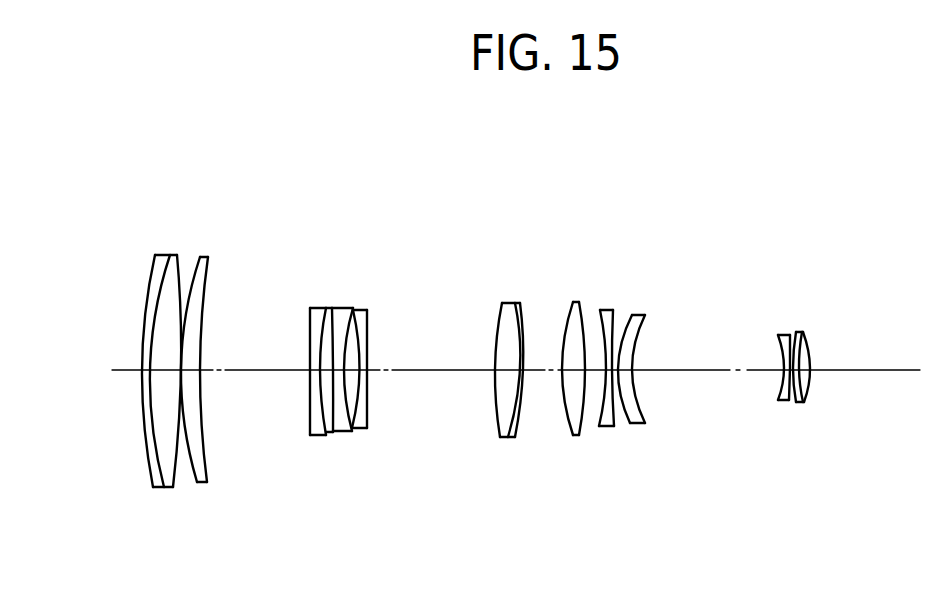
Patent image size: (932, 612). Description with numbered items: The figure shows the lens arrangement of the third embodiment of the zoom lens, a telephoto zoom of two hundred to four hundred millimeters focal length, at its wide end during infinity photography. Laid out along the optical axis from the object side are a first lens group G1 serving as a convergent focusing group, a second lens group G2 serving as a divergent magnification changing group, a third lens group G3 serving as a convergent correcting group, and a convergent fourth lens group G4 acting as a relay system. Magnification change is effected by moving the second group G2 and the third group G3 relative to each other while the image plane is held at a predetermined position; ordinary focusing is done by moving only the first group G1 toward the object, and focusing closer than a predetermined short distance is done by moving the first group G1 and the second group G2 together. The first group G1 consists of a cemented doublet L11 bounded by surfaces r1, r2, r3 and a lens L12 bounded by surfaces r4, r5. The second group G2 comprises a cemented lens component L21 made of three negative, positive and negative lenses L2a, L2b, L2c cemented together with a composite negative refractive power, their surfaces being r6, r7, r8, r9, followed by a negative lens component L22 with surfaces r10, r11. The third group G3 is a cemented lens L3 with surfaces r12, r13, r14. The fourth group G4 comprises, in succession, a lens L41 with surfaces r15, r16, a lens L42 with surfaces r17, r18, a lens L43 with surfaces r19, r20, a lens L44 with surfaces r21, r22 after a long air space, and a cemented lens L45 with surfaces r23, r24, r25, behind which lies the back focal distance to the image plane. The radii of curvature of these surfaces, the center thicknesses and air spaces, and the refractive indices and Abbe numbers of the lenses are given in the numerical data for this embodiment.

The first lens group G1 is at (225, 197).
The second lens group G2 is at (387, 197).
The third lens group G3 is at (513, 357).
The fourth lens group G4 is at (827, 249).
The cemented lens component L11 is at (187, 243).
The lens L12 is at (208, 257).
The cemented lens component L21 is at (360, 252).
The negative lens L2a is at (313, 307).
The positive lens L2b is at (330, 308).
The negative lens L2c is at (345, 307).
The negative lens component L22 is at (360, 308).
The lens L3 is at (525, 293).
The lens L41 is at (576, 302).
The lens L42 is at (610, 310).
The lens L43 is at (641, 315).
The lens L44 is at (782, 335).
The lens L45 is at (788, 322).
The lens surface r1 is at (149, 473).
The lens surface r2 is at (164, 478).
The lens surface r3 is at (175, 478).
The lens surface r4 is at (198, 486).
The lens surface r5 is at (208, 475).
The lens surface r6 is at (308, 432).
The lens surface r7 is at (318, 436).
The lens surface r8 is at (333, 433).
The lens surface r9 is at (343, 432).
The lens surface r10 is at (357, 430).
The lens surface r11 is at (368, 415).
The lens surface r12 is at (498, 403).
The lens surface r13 is at (514, 437).
The lens surface r14 is at (523, 400).
The lens surface r15 is at (567, 412).
The lens surface r16 is at (585, 420).
The lens surface r17 is at (604, 422).
The lens surface r18 is at (615, 424).
The lens surface r19 is at (633, 420).
The lens surface r20 is at (648, 413).
The lens surface r21 is at (778, 393).
The lens surface r22 is at (785, 400).
The lens surface r23 is at (792, 402).
The lens surface r24 is at (805, 398).
The lens surface r25 is at (812, 390).